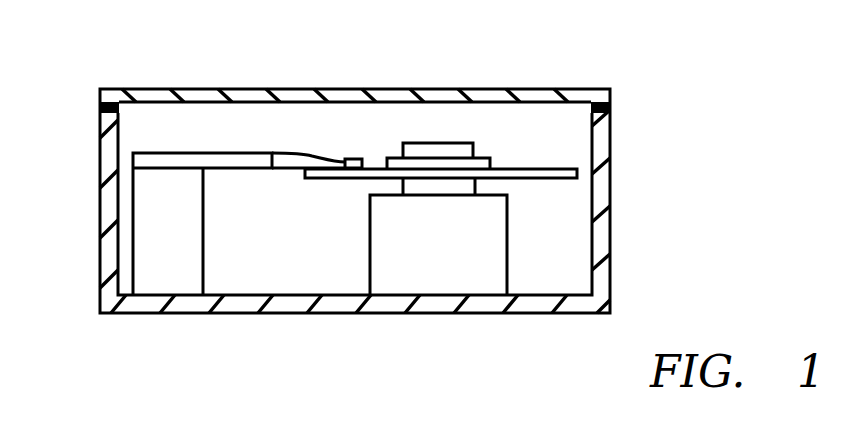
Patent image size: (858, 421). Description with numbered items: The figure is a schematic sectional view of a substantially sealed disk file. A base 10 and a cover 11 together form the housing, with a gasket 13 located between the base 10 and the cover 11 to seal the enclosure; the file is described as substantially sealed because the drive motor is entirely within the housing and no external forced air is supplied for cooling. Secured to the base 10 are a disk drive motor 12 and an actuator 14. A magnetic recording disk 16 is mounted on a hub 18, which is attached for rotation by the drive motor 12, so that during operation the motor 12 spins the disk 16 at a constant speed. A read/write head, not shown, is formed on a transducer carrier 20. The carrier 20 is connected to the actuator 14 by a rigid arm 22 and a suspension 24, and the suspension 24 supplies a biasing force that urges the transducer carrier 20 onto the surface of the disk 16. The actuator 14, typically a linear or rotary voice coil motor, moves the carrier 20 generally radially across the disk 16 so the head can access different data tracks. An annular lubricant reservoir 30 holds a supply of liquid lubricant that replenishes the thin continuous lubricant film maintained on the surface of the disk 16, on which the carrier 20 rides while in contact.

The base 10 is at (600, 193).
The cover 11 is at (119, 98).
The disk drive motor 12 is at (413, 277).
The gasket 13 is at (608, 103).
The actuator 14 is at (177, 272).
The magnetic recording disk 16 is at (517, 170).
The hub 18 is at (438, 150).
The transducer carrier 20 is at (350, 158).
The rigid arm 22 is at (210, 160).
The suspension 24 is at (313, 153).
The annular lubricant reservoir 30 is at (418, 150).